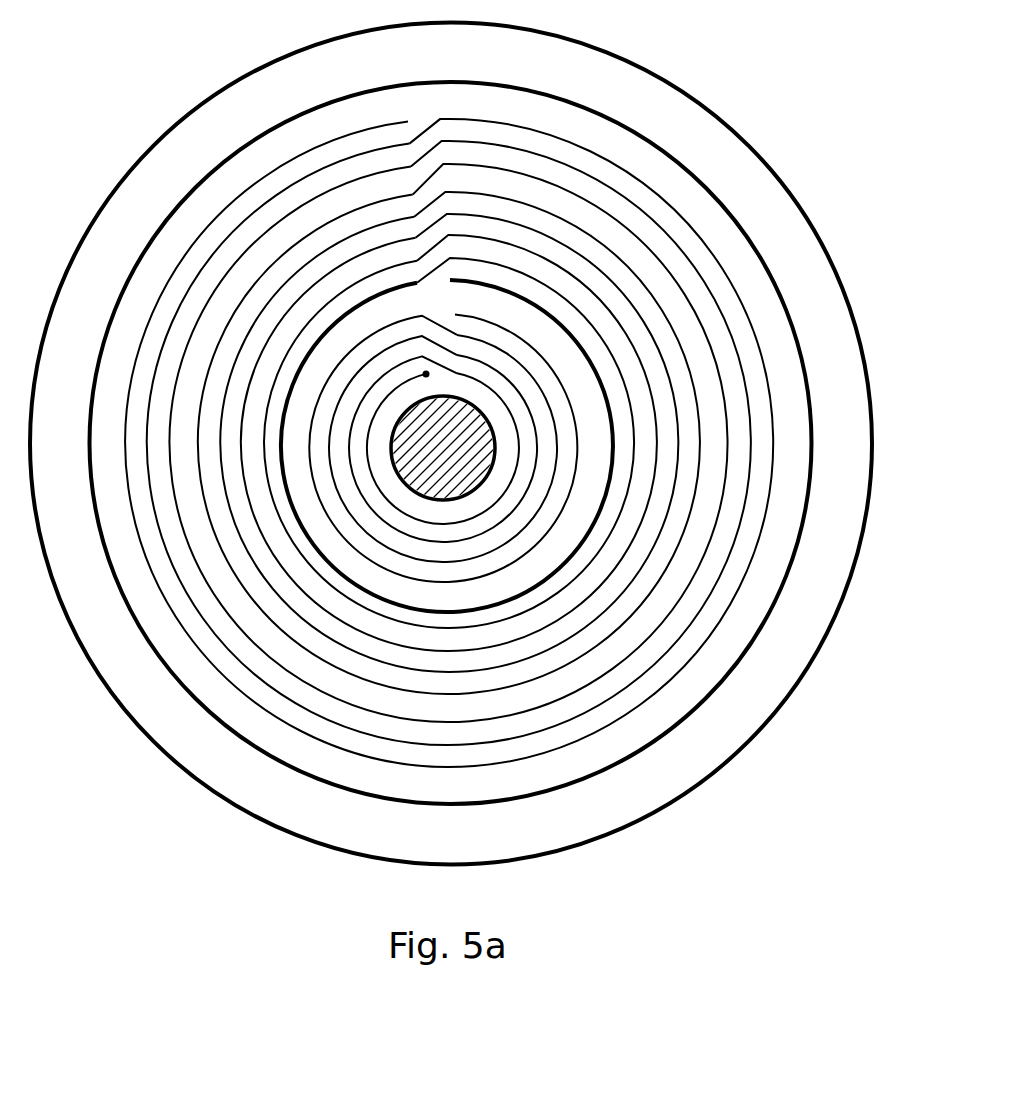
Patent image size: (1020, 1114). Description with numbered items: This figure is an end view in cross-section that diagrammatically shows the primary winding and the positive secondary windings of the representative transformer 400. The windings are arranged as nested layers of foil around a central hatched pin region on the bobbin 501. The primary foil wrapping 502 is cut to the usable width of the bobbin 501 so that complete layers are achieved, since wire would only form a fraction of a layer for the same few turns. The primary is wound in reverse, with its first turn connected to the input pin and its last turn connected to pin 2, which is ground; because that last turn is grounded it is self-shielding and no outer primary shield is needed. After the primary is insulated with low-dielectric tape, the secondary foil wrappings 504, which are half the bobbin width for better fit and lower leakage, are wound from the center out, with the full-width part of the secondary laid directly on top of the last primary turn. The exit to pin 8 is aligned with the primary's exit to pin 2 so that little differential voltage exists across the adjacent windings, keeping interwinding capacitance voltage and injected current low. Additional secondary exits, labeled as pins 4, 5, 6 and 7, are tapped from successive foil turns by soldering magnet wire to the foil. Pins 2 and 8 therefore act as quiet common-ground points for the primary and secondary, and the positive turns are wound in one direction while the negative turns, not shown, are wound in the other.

The transformer 400 is at (852, 198).
The bobbin 501 is at (430, 442).
The primary foil wrapping 502 is at (572, 503).
The secondary foil wrappings 504 is at (640, 596).
The pin 2 is at (443, 443).
The pin 4 is at (449, 435).
The pin 5 is at (449, 436).
The pin 6 is at (449, 434).
The pin 7 is at (449, 434).
The pin 8 is at (447, 441).